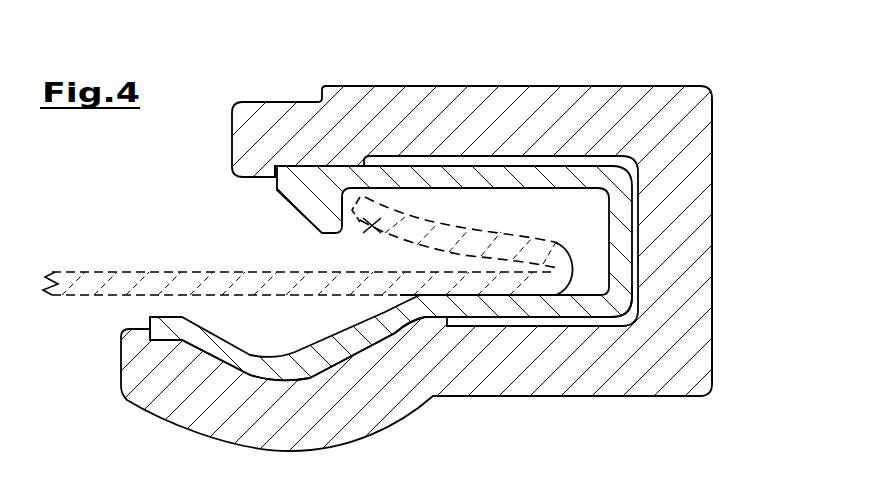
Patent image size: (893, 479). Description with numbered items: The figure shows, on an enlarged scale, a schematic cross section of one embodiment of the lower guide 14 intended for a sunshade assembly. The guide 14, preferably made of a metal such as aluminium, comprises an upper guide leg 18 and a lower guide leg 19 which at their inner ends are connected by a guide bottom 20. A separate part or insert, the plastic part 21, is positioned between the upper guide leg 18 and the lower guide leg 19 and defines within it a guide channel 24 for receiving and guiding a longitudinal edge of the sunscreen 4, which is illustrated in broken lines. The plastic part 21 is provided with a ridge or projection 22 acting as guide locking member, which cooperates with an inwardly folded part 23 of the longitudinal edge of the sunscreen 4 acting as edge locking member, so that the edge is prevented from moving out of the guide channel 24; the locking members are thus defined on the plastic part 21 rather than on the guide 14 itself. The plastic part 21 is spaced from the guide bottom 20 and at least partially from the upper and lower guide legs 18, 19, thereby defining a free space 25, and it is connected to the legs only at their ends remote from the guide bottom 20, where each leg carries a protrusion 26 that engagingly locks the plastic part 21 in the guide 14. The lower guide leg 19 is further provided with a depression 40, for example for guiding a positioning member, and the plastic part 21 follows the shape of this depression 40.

The sunscreen 4 is at (160, 284).
The lower guide 14 is at (653, 85).
The upper guide leg 18 is at (538, 97).
The lower guide leg 19 is at (535, 382).
The guide bottom 20 is at (697, 216).
The plastic part 21 is at (609, 207).
The ridge or projection 22 is at (325, 229).
The inwardly folded part 23 is at (369, 234).
The guide channel 24 is at (506, 208).
The free space 25 is at (630, 306).
The protrusion 26 is at (270, 180).
The depression 40 is at (277, 380).